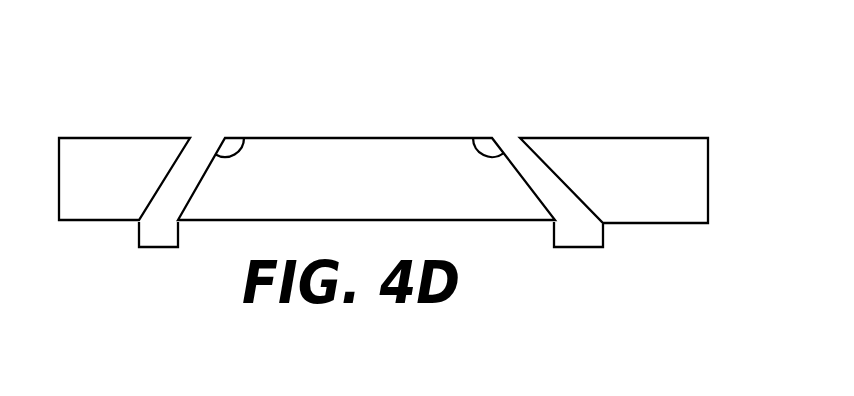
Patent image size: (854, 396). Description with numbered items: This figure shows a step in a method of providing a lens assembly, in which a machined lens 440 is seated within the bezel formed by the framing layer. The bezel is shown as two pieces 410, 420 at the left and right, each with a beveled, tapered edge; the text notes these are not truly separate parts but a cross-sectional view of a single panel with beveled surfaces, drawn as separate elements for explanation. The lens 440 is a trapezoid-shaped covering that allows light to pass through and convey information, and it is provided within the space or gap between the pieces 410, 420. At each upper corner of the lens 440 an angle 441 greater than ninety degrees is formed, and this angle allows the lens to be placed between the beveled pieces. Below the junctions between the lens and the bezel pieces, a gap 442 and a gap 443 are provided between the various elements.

The piece 410 is at (122, 138).
The piece 420 is at (615, 138).
The lens 440 is at (330, 138).
The angle 441 is at (246, 139).
The gap 442 is at (157, 247).
The gap 443 is at (577, 247).